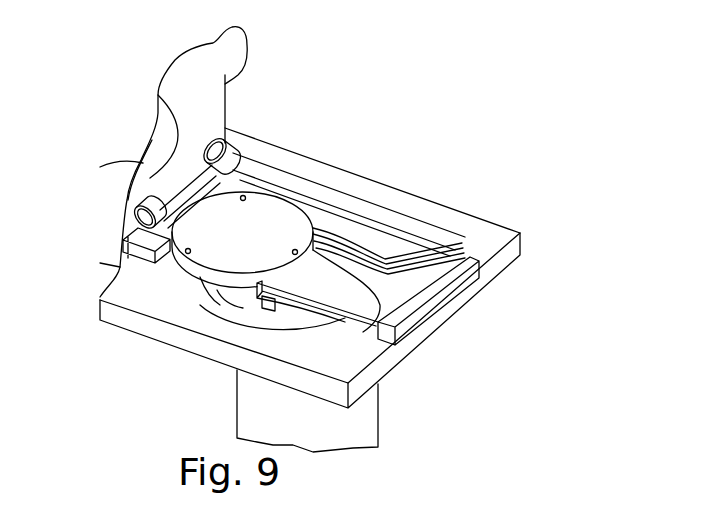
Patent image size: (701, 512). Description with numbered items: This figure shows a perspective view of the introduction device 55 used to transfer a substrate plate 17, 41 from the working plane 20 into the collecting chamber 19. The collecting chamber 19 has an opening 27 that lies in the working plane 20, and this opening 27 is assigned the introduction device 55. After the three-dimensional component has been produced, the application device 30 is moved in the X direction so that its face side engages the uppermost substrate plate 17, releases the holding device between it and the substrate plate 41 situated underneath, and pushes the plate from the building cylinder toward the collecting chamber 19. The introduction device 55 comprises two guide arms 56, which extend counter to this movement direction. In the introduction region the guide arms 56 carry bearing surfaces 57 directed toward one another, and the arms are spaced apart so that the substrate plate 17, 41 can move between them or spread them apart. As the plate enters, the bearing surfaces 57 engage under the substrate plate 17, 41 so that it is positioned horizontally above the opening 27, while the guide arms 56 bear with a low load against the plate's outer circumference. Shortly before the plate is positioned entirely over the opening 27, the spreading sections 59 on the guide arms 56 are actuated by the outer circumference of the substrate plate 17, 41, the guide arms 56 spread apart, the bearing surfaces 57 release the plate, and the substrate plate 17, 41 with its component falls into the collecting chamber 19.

The substrate plate 17 is at (263, 217).
The collecting chamber 19 is at (378, 426).
The working plane 20 is at (185, 290).
The opening 27 is at (230, 320).
The application device 30 is at (150, 153).
The substrate plate 41 is at (242, 232).
The introduction device 55 is at (500, 315).
The guide arms 56 is at (420, 252).
The bearing surfaces 57 is at (323, 287).
The spreading sections 59 is at (390, 247).